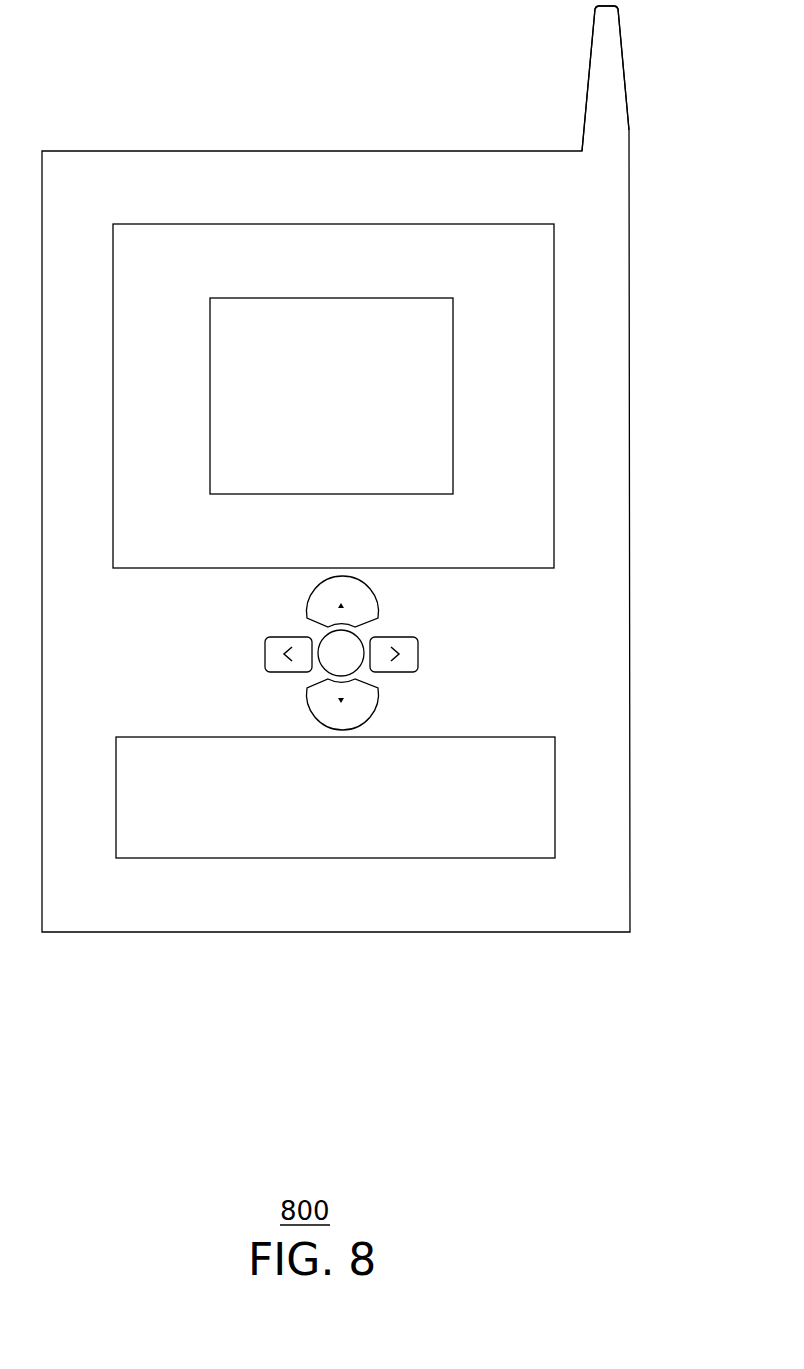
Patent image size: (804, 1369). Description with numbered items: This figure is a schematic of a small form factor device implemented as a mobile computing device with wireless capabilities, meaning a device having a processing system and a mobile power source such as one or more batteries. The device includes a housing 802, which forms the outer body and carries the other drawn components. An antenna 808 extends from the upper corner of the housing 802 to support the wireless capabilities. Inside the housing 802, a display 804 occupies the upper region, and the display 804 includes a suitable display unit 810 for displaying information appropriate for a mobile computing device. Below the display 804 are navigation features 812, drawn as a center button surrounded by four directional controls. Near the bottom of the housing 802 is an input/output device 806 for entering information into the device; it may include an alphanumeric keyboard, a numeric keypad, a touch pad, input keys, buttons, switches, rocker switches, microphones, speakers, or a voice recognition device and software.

The housing 802 is at (630, 525).
The display 804 is at (490, 224).
The input/output (I/O) device 806 is at (555, 767).
The antenna 808 is at (590, 55).
The display unit 810 is at (395, 298).
The navigation features 812 is at (430, 643).